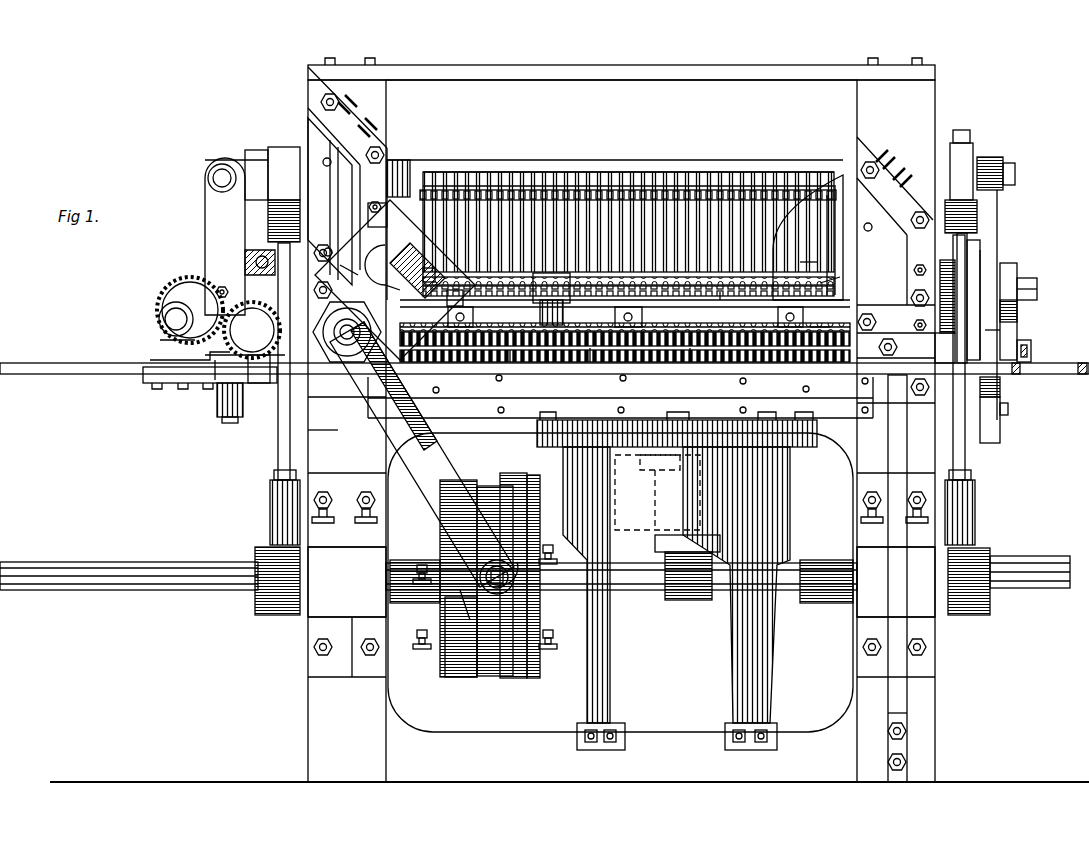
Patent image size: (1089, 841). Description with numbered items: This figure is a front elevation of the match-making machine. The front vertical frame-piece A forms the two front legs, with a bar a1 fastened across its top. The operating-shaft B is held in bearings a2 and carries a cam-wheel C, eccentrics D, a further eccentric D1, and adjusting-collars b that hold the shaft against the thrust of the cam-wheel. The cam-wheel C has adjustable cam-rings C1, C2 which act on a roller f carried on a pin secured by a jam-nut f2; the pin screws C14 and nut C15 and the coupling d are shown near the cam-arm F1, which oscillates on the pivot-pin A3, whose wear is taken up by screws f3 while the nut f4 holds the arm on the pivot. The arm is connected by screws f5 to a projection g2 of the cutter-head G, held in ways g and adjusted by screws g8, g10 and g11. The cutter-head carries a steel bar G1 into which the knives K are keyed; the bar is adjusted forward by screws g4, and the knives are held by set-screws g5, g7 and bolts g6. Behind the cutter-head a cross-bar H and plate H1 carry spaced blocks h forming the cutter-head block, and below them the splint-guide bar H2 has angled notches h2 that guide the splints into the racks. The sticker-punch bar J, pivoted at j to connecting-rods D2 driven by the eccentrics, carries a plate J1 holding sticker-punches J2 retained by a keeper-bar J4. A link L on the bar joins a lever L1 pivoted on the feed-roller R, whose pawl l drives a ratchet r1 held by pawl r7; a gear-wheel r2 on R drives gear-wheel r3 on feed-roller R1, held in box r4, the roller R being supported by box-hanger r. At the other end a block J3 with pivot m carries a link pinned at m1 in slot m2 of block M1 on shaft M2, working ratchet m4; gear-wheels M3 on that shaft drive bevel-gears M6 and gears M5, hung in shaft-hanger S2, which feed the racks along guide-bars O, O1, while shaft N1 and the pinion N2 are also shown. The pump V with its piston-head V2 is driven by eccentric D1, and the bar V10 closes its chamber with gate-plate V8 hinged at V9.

The front vertical frame-piece A is at (569, 431).
The bar a1 is at (608, 66).
The bearings a2 is at (621, 582).
The pivot-pin A3 is at (350, 308).
The operating-shaft B is at (130, 570).
The adjusting-collars b is at (412, 603).
The cam-wheel C is at (495, 650).
The cam-ring C1 is at (530, 478).
The cam-ring C2 is at (452, 678).
The clamp screws C14 is at (424, 566).
The gear wheel C15 is at (513, 508).
The eccentrics D is at (262, 612).
The eccentric D1 is at (672, 603).
The connecting-rods D2 is at (277, 432).
The couplings on vertical shafts d is at (270, 525).
The oscillating lever F1 is at (424, 454).
The roller f is at (461, 605).
The jam-nut f2 is at (503, 566).
The screws f3 is at (338, 388).
The nut f4 is at (420, 316).
The screws f5 is at (370, 214).
The cutter-head G is at (593, 209).
The steel bar G1 is at (825, 320).
The ways g is at (610, 293).
The projection g2 is at (312, 112).
The screws g4 is at (648, 295).
The set-screws g5 is at (816, 260).
The bolts g6 is at (842, 277).
The set-screws g7 is at (731, 302).
The screws g8 is at (920, 170).
The screws g10 is at (648, 264).
The screws g11 is at (608, 227).
The cross-bar H is at (625, 310).
The plate H1 is at (515, 371).
The splint-guide bar H2 is at (547, 371).
The blocks h is at (625, 323).
The notches h2 is at (595, 362).
The sticker-punch bar J is at (500, 172).
The plate J1 is at (408, 180).
The sticker-punches J2 is at (600, 172).
The block J3 is at (228, 158).
The keeper-bar J4 is at (551, 299).
The pivot j is at (283, 165).
The knives K is at (482, 362).
The link L is at (998, 210).
The lever L1 is at (1017, 268).
The pawl l is at (1017, 312).
The block M1 is at (150, 282).
The shaft M2 is at (160, 320).
The gear-wheels M3 is at (262, 384).
The gears M5 is at (222, 410).
The bevel-gears M6 is at (205, 384).
The pivot m is at (208, 178).
The pin m1 is at (220, 288).
The slot m2 is at (185, 300).
The ratchet m4 is at (158, 348).
The shaft N1 is at (285, 290).
The bevel pinion N2 is at (270, 248).
The guide-bar O is at (1065, 374).
The guide-bar O1 is at (64, 364).
The feed-roller R is at (1031, 350).
The feed-roller R1 is at (1037, 290).
The box-hanger r is at (944, 375).
The ratchet r1 is at (1001, 385).
The gear-wheel r2 is at (1000, 332).
The gear-wheel r3 is at (975, 290).
The box r4 is at (990, 260).
The pawl r7 is at (1001, 420).
The shaft-hanger S2 is at (225, 410).
The pump V is at (635, 498).
The piston-head V2 is at (632, 452).
The gate-plate V8 is at (475, 397).
The hinge V9 is at (690, 397).
The bar V10 is at (620, 395).